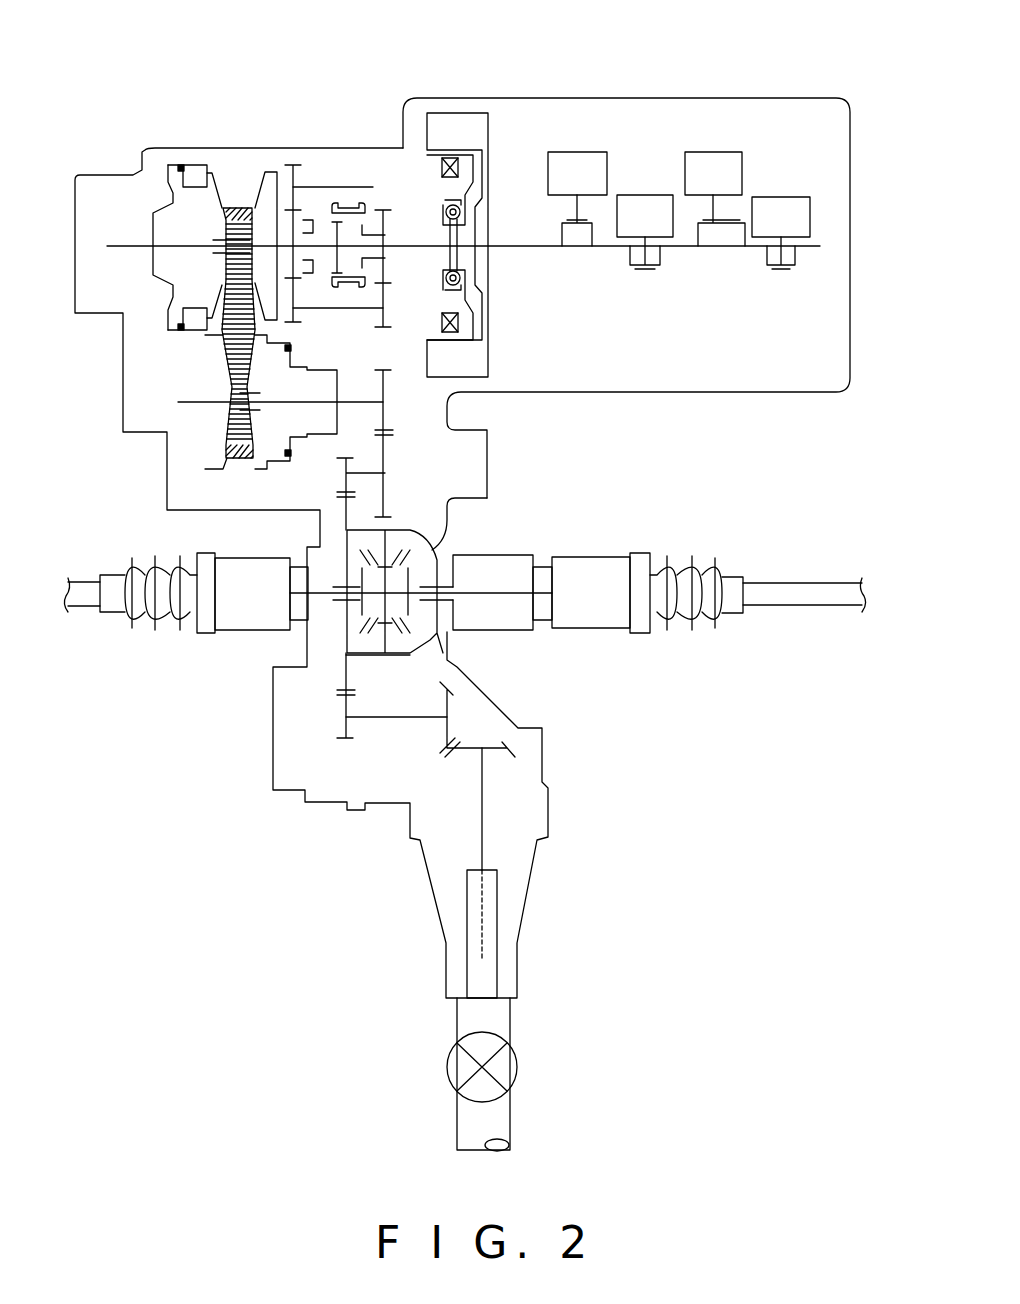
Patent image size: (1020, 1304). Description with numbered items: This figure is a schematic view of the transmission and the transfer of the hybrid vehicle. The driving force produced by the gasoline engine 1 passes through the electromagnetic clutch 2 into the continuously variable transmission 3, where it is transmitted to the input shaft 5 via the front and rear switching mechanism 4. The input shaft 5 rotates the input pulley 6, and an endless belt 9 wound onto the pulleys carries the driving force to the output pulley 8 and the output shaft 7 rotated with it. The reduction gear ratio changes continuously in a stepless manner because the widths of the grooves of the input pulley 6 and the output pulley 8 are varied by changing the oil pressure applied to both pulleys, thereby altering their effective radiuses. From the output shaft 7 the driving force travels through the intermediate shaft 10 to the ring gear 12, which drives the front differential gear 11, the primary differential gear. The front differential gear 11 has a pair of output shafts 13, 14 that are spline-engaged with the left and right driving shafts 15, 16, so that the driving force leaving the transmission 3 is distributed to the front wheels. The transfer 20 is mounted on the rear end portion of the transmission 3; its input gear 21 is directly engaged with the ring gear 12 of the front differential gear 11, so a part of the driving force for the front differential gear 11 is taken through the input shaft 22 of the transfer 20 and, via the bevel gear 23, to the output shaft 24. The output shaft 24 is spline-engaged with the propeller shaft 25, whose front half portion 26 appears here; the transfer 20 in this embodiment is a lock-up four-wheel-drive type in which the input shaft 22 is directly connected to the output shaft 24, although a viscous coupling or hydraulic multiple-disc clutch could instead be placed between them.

The gasoline engine 1 is at (815, 92).
The electromagnetic clutch 2 is at (458, 104).
The transmission 3 is at (143, 142).
The front and rear switching mechanism 4 is at (338, 175).
The input shaft 5 is at (268, 245).
The input pulley 6 is at (145, 226).
The output shaft 7 is at (195, 400).
The output pulley 8 is at (250, 470).
The endless belt 9 is at (228, 298).
The intermediate shaft 10 is at (385, 470).
The front differential gear 11 is at (447, 550).
The ring gear 12 is at (343, 627).
The output shaft 13 is at (290, 595).
The output shaft 14 is at (585, 593).
The left driving shaft 15 is at (80, 600).
The right driving shaft 16 is at (788, 598).
The transfer 20 is at (548, 768).
The input gear 21 is at (345, 727).
The input shaft 22 is at (390, 718).
The bevel gear 23 is at (472, 728).
The output shaft 24 is at (480, 830).
The propeller shaft 25 is at (527, 1050).
The front half portion 26 is at (463, 1130).